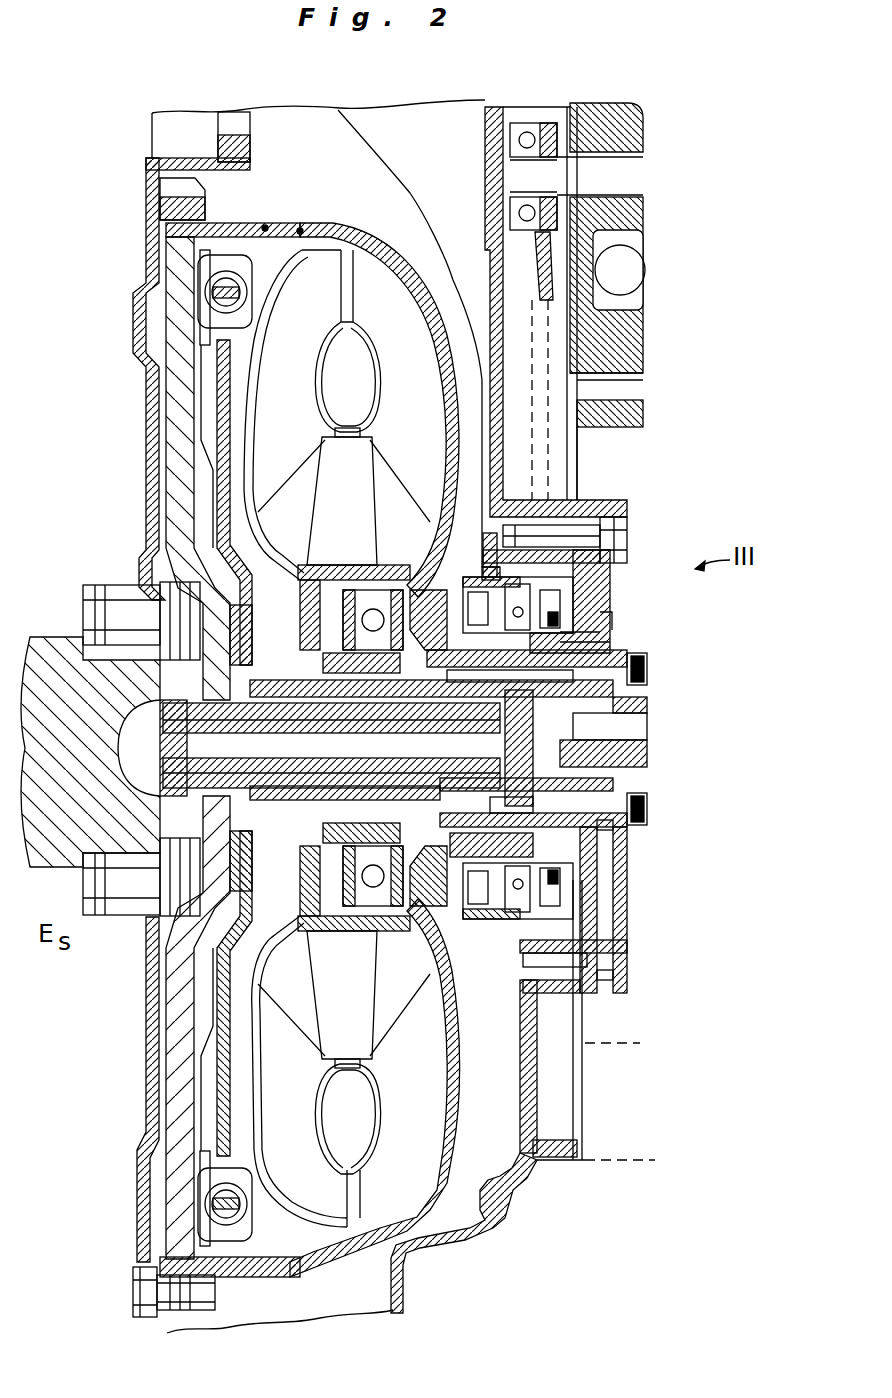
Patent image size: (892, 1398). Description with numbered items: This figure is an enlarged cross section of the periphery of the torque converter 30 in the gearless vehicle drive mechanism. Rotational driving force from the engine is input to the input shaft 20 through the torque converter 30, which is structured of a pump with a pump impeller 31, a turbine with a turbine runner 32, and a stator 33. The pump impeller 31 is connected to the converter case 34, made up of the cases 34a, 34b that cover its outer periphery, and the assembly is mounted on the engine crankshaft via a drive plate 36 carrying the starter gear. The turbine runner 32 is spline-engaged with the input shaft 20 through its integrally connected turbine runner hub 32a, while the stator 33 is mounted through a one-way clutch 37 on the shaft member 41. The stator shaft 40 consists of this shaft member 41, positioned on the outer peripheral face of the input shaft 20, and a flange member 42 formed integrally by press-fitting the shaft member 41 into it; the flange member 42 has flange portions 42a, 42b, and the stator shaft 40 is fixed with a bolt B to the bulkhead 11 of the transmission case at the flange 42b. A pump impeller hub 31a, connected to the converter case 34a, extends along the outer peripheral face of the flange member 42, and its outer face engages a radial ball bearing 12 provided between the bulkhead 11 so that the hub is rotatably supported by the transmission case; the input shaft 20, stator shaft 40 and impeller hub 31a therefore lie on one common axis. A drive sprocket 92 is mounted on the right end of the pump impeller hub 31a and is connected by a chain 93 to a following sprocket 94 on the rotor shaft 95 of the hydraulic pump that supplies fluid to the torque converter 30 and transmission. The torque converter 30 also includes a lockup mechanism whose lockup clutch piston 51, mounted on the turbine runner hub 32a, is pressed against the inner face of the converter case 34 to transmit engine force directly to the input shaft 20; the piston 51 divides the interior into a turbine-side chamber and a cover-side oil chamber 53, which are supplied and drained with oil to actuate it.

The bulkhead 11 is at (487, 290).
The radial ball bearing 12 is at (590, 605).
The input shaft 20 is at (160, 683).
The torque converter 30 is at (390, 190).
The pump impeller 31 is at (421, 378).
The pump impeller hub 31a is at (410, 700).
The turbine runner 32 is at (292, 378).
The turbine runner hub 32a is at (331, 745).
The stator 33 is at (354, 518).
The converter case 34 is at (310, 704).
The converter case 34a is at (375, 722).
The converter case 34b is at (257, 226).
The drive plate 36 is at (150, 222).
The one-way clutch 37 is at (365, 610).
The stator shaft 40 is at (662, 794).
The shaft member 41 is at (630, 692).
The flange member 42 is at (632, 655).
The flange 42a is at (612, 638).
The flange 42b is at (614, 616).
The lockup clutch piston 51 is at (228, 478).
The cover-side oil chamber 53 is at (200, 498).
The drive sprocket 92 is at (580, 580).
The chain 93 is at (570, 356).
The following sprocket 94 is at (600, 290).
The rotor shaft 95 is at (625, 165).
The bolt B is at (603, 633).